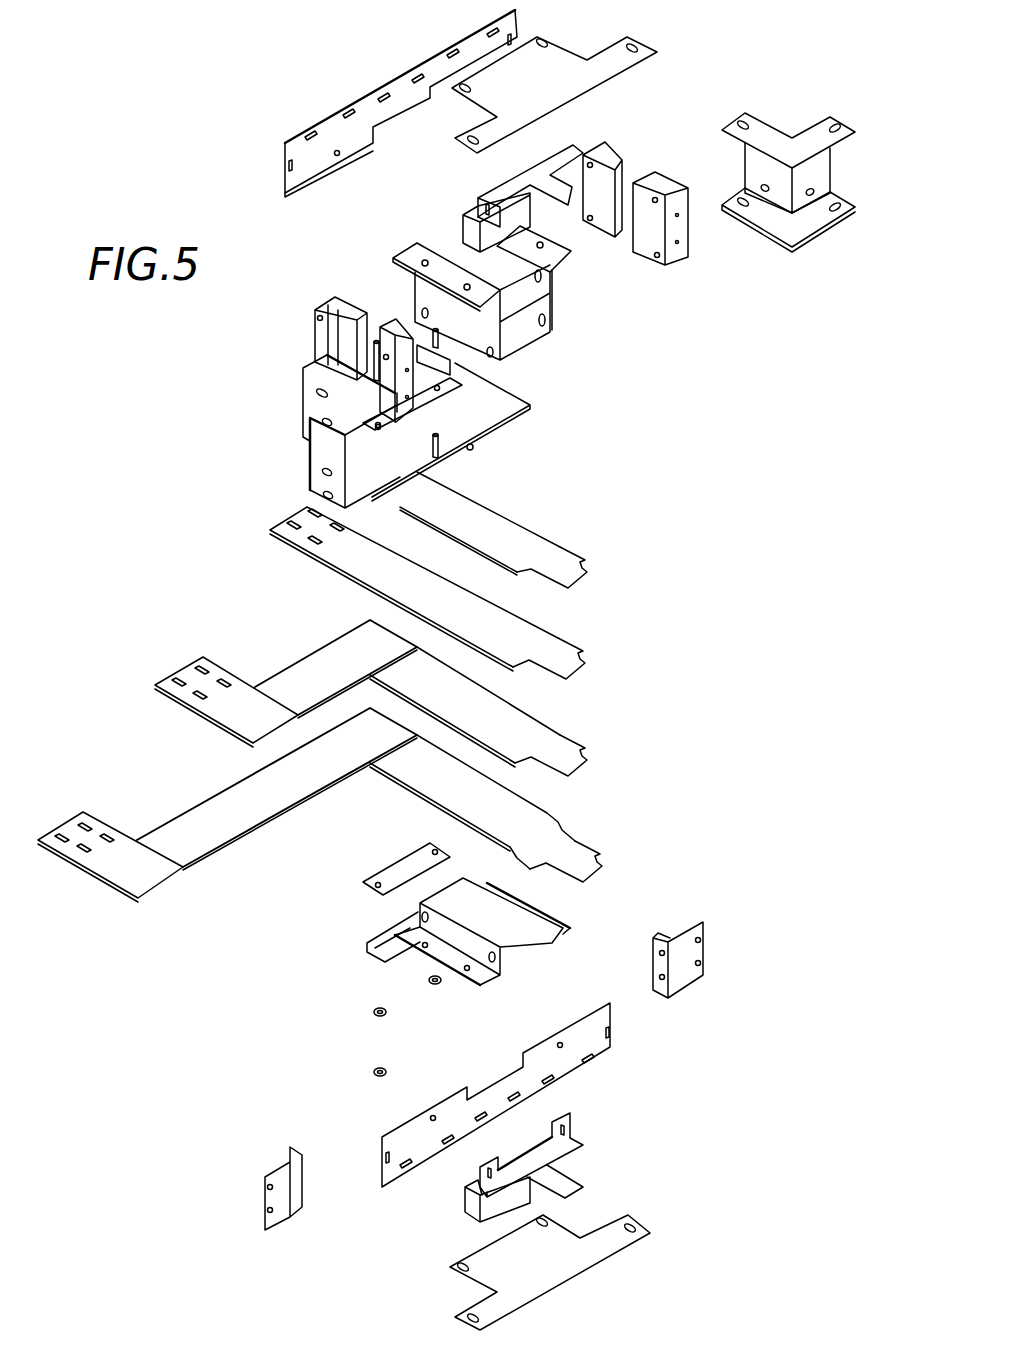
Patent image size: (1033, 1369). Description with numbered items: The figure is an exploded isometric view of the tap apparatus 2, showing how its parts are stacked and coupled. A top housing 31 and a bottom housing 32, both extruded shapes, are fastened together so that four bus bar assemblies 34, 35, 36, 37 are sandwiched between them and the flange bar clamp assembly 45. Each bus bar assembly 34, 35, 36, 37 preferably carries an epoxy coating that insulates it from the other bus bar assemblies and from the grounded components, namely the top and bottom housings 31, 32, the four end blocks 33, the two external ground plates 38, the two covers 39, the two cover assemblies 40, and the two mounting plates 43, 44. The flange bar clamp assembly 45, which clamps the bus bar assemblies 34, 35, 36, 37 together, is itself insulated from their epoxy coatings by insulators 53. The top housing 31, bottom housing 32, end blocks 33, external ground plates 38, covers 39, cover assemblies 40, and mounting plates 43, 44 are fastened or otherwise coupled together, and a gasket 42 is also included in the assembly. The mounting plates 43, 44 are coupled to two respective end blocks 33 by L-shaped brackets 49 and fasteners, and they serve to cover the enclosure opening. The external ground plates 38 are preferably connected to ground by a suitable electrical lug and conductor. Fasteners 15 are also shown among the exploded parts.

The tap apparatus 2 is at (672, 512).
The fastener nuts 15 is at (407, 975).
The top housing 31 is at (552, 310).
The bottom housing 32 is at (568, 930).
The end blocks 33 is at (673, 178).
The bus bar assembly 34 is at (523, 398).
The bus bar assembly 35 is at (590, 650).
The bus bar assembly 36 is at (590, 745).
The bus bar assembly 37 is at (590, 840).
The external ground plates 38 is at (563, 147).
The covers 39 is at (568, 46).
The cover assemblies 40 is at (765, 123).
The gasket 42 is at (466, 1212).
The mounting plate 43 is at (333, 125).
The mounting plate 44 is at (603, 1050).
The flange bar clamp assembly 45 is at (420, 340).
The L-shaped brackets 49 is at (683, 982).
The insulators 53 is at (470, 447).